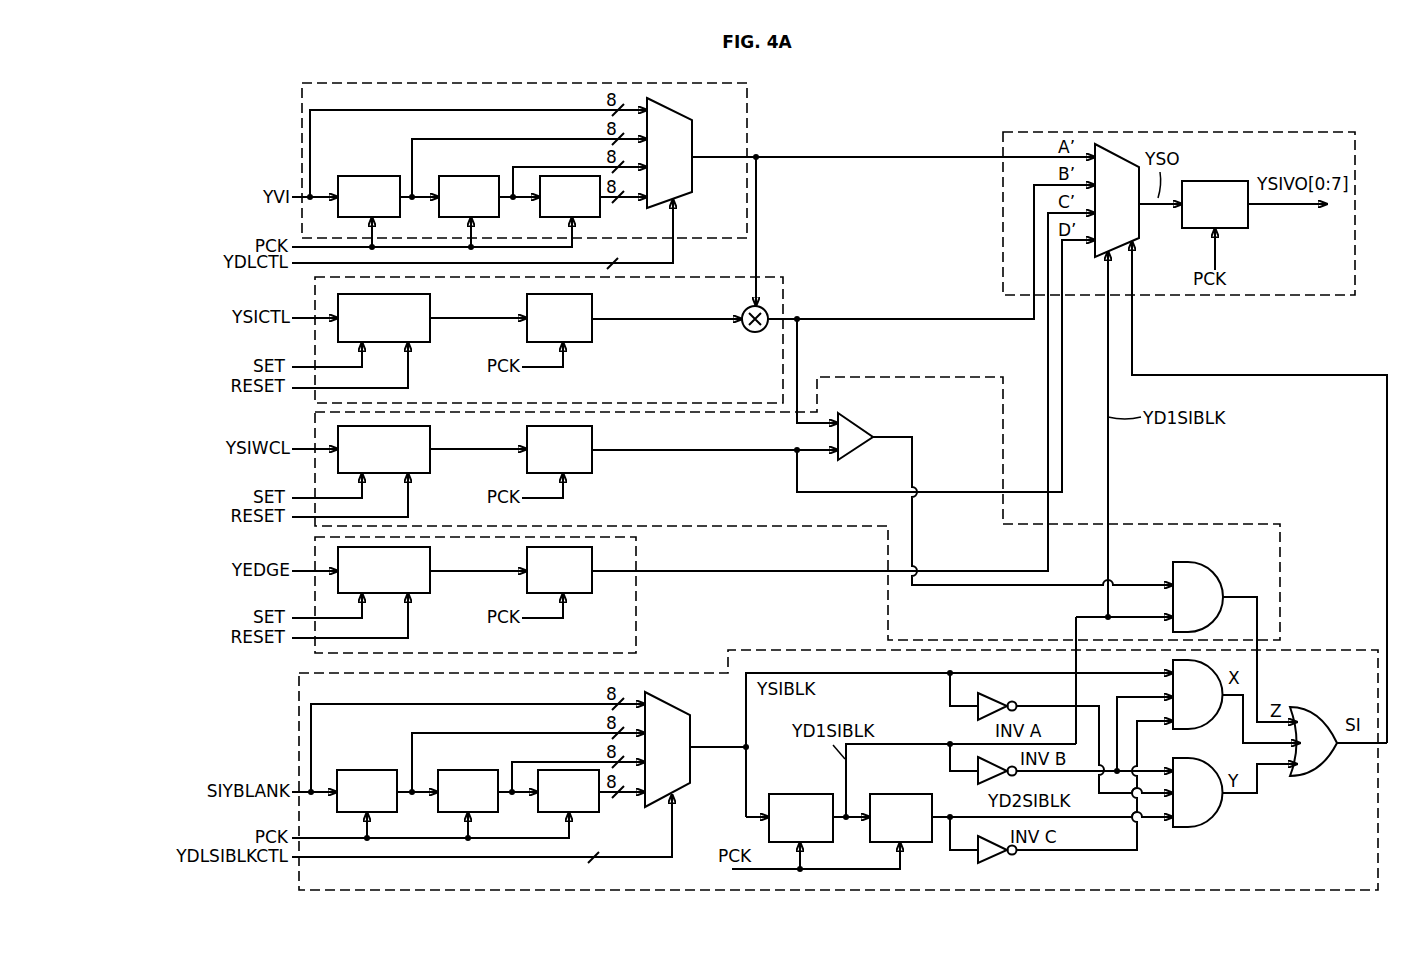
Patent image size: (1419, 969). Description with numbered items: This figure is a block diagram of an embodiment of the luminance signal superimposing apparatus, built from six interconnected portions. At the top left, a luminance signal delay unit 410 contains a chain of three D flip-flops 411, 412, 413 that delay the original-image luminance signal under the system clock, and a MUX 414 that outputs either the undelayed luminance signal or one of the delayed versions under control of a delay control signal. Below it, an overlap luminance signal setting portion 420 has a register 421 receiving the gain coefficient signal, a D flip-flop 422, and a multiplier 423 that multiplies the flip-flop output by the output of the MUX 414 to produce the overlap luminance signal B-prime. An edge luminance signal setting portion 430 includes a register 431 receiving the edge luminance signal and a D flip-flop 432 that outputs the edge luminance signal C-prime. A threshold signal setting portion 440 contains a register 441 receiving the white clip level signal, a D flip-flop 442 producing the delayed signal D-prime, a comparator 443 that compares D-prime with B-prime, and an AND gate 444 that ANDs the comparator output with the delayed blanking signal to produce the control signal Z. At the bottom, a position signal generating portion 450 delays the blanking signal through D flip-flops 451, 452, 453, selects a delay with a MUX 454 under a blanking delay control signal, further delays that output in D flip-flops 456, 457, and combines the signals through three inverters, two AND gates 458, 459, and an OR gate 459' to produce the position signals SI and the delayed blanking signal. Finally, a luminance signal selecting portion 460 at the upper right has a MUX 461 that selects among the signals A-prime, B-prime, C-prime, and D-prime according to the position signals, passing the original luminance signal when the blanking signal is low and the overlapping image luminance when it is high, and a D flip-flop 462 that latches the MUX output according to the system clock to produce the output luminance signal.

The luminance signal delay unit 410 is at (747, 118).
The D flip-flop 411 is at (362, 176).
The D flip-flop 412 is at (490, 176).
The D flip-flop 413 is at (602, 211).
The MUX 414 is at (692, 182).
The overlap luminance signal setting portion 420 is at (772, 276).
The register 421 is at (420, 342).
The D flip-flop 422 is at (578, 342).
The multiplier 423 is at (748, 333).
The edge luminance signal setting portion 430 is at (636, 600).
The register 431 is at (420, 593).
The D flip-flop 432 is at (578, 593).
The threshold signal setting portion 440 is at (1152, 524).
The register 441 is at (420, 473).
The D flip-flop 442 is at (578, 473).
The comparator 443 is at (868, 403).
The AND gate 444 is at (1168, 563).
The position signal generating portion 450 is at (788, 649).
The D flip-flop 451 is at (370, 770).
The D flip-flop 452 is at (462, 770).
The D flip-flop 453 is at (588, 812).
The MUX 454 is at (692, 773).
The D flip-flop 456 is at (800, 794).
The D flip-flop 457 is at (900, 794).
The AND gate 458 is at (1207, 727).
The AND gate 459 is at (1216, 807).
The OR gate 459' is at (1311, 770).
The luminance signal selecting portion 460 is at (1243, 295).
The MUX 461 is at (1140, 225).
The D flip-flop 462 is at (1235, 230).